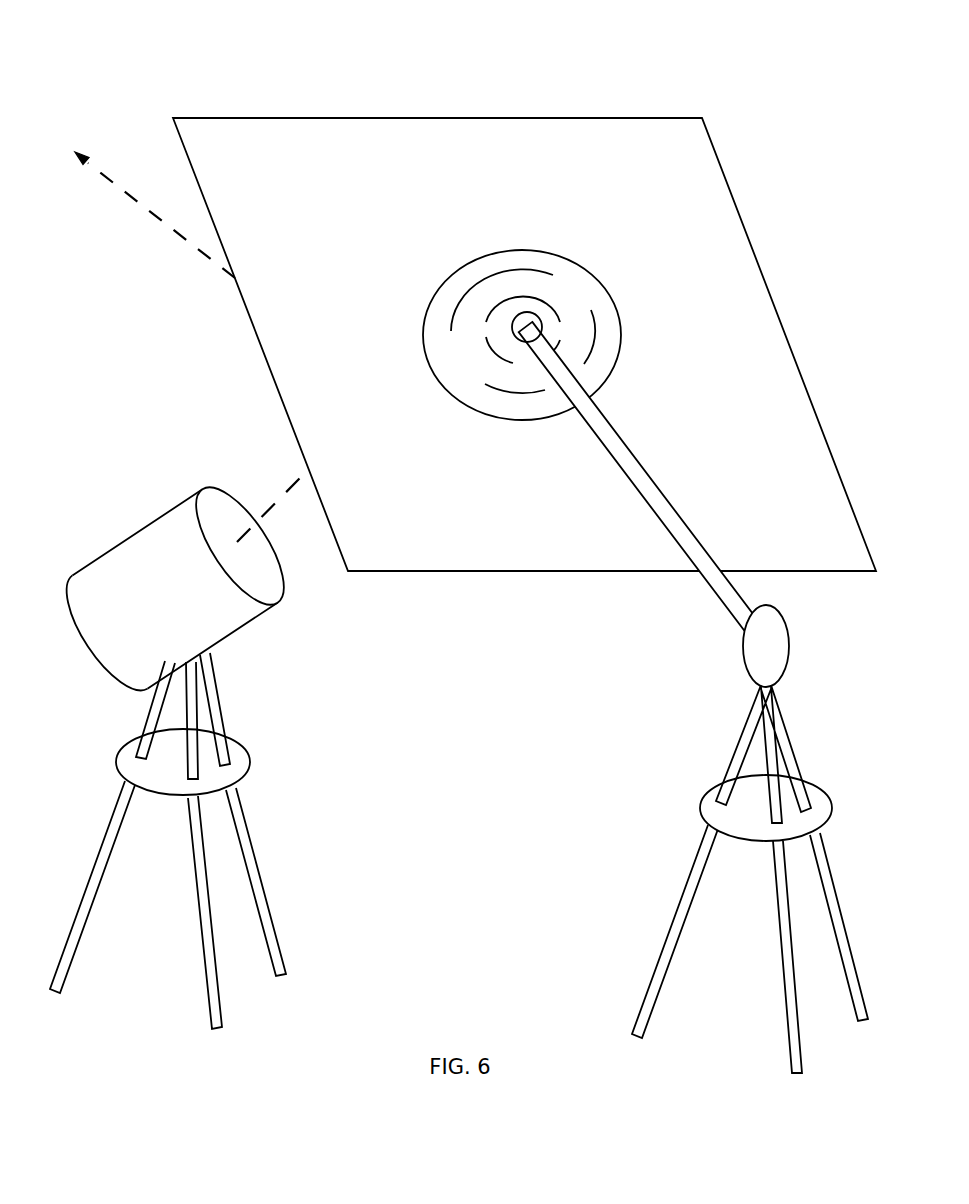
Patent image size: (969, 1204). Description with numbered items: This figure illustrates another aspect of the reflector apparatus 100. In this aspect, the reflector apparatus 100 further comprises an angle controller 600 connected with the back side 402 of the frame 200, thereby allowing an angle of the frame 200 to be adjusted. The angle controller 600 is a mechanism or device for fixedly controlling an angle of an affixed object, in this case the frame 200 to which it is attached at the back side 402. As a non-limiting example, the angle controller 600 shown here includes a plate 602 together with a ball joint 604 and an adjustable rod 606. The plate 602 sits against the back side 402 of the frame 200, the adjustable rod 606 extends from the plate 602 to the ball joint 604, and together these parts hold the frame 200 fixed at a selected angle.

The reflector apparatus 100 is at (653, 572).
The frame 200 is at (302, 118).
The back side 402 is at (762, 378).
The angle controller 600 is at (482, 298).
The plate 602 is at (523, 252).
The ball joint 604 is at (537, 318).
The adjustable rod 606 is at (613, 453).